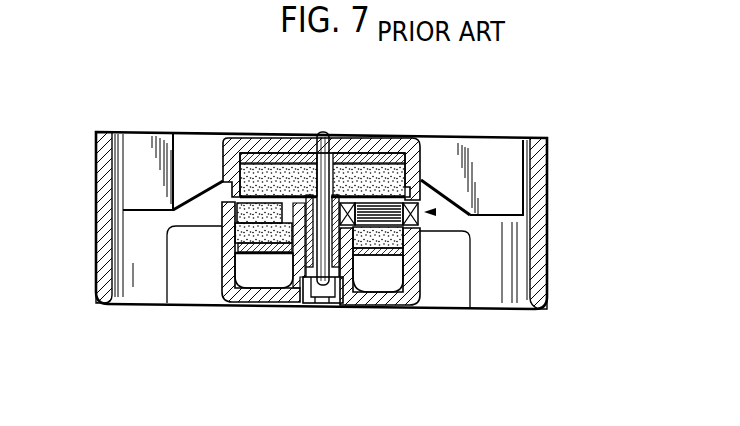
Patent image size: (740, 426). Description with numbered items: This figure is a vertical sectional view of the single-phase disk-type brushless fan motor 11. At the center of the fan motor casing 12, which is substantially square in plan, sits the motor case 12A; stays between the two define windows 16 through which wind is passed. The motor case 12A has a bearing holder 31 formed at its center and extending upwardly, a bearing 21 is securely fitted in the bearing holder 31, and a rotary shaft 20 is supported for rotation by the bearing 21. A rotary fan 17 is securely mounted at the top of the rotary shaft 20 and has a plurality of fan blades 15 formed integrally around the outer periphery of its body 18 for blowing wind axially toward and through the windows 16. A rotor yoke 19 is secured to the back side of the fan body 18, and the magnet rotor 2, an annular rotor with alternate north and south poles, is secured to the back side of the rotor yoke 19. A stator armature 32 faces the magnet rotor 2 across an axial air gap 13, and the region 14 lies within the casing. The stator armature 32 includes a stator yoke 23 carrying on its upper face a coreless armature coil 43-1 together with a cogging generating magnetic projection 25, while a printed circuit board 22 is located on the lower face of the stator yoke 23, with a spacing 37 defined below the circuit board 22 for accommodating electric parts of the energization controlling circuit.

The single-phase disk-type brushless fan motor 11 is at (480, 110).
The fan motor casing 12 is at (537, 182).
The motor case 12A is at (279, 302).
The axial air gap 13 is at (222, 196).
The space 14 is at (149, 216).
The fan blades 15 is at (505, 150).
The windows 16 is at (143, 308).
The rotary fan 17 is at (425, 130).
The body 18 is at (373, 142).
The rotor yoke 19 is at (258, 157).
The magnet rotor 2 is at (277, 172).
The rotary shaft 20 is at (333, 130).
The bearing 21 is at (353, 302).
The printed circuit board 22 is at (393, 278).
The stator yoke 23 is at (428, 229).
The cogging generating magnetic projection 25 is at (240, 216).
The bearing holder 31 is at (295, 256).
The stator armature 32 is at (434, 212).
The spacing 37 is at (397, 282).
The coreless armature coil 43-1 is at (424, 219).